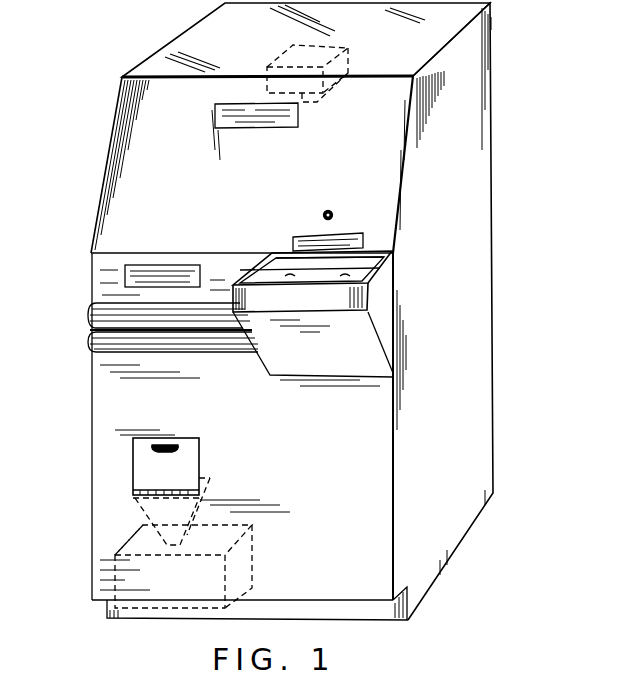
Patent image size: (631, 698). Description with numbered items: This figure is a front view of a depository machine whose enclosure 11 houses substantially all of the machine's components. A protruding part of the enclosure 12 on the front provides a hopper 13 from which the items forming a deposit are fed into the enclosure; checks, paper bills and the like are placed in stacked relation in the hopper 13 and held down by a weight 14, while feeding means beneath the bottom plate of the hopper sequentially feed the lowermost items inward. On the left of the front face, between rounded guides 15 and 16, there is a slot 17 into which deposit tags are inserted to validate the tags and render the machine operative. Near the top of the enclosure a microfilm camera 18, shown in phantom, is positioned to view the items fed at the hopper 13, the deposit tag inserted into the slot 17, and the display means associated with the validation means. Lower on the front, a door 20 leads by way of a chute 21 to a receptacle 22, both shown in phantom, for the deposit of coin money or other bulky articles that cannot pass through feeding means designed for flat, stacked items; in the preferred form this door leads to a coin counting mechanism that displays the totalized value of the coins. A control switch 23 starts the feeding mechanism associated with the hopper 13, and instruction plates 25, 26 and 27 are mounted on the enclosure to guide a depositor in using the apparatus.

The enclosure 11 is at (480, 245).
The protruding part of the enclosure 12 is at (385, 318).
The hopper 13 is at (362, 258).
The weight 14 is at (284, 270).
The rounded guide 15 is at (90, 308).
The rounded guide 16 is at (90, 350).
The slot 17 is at (90, 331).
The microfilm camera 18 is at (338, 41).
The door 20 is at (192, 448).
The chute 21 is at (212, 487).
The receptacle 22 is at (237, 555).
The control switch 23 is at (333, 211).
The instruction plate 25 is at (347, 235).
The instruction plate 26 is at (215, 123).
The instruction plate 27 is at (158, 267).